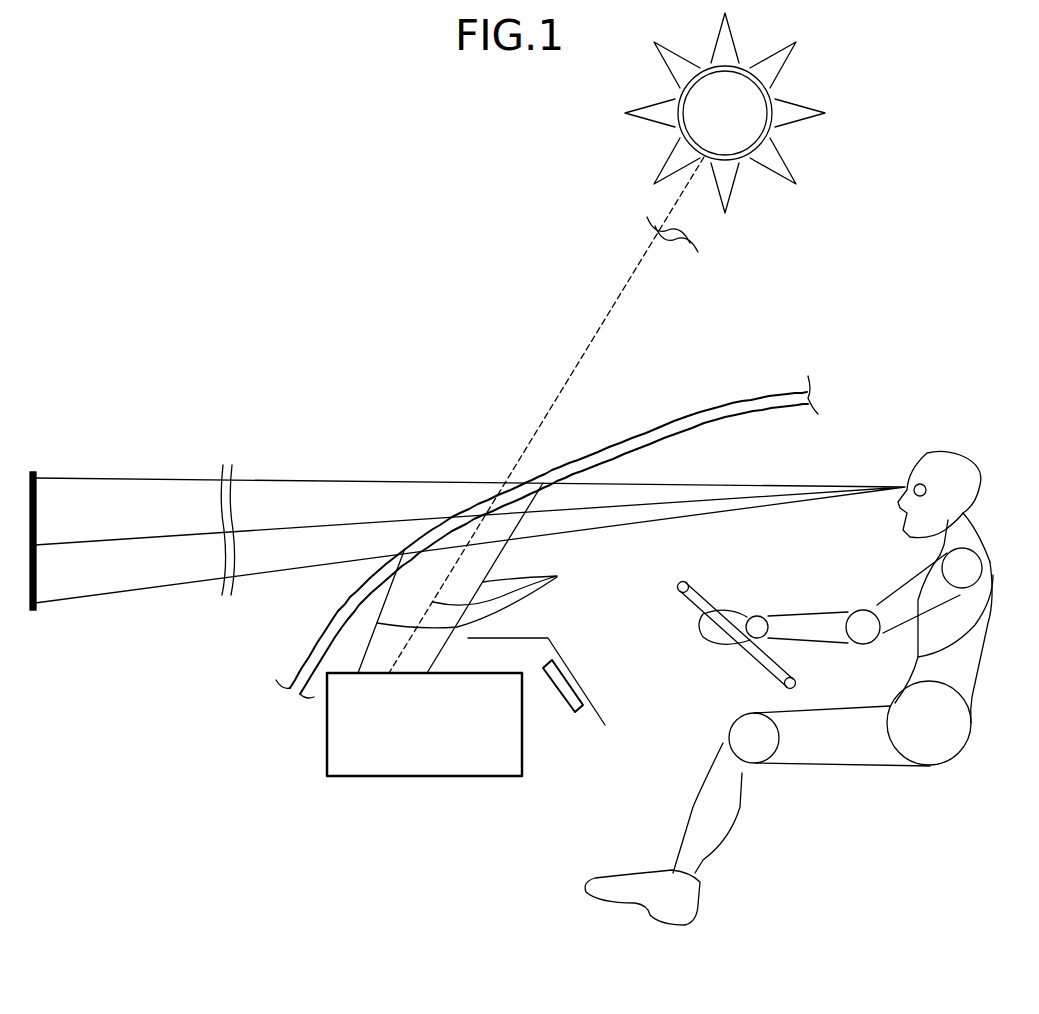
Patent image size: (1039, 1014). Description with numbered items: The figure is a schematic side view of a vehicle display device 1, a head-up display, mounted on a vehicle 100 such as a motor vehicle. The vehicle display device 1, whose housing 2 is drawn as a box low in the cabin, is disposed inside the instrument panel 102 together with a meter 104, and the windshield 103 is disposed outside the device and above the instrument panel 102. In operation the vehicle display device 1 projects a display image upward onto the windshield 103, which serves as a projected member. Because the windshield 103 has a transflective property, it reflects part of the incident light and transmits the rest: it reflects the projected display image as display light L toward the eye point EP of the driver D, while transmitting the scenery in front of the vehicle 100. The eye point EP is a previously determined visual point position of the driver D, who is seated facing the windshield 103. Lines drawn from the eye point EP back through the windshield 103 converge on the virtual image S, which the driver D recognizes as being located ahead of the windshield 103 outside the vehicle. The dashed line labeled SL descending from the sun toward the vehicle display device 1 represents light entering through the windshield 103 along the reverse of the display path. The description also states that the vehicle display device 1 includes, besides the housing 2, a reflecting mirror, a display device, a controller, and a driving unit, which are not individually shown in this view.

The vehicle 100 is at (435, 565).
The vehicle display device 1 is at (459, 674).
The housing 2 is at (327, 740).
The instrument panel 102 is at (600, 708).
The meter 104 is at (555, 690).
The windshield 103 is at (692, 428).
The display light L is at (475, 599).
The sunlight SL is at (583, 347).
The virtual image S is at (36, 503).
The eye point EP is at (905, 488).
The driver D is at (789, 658).